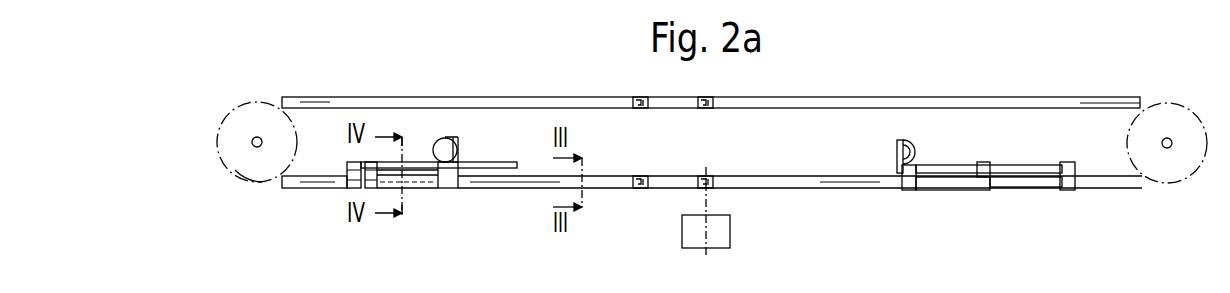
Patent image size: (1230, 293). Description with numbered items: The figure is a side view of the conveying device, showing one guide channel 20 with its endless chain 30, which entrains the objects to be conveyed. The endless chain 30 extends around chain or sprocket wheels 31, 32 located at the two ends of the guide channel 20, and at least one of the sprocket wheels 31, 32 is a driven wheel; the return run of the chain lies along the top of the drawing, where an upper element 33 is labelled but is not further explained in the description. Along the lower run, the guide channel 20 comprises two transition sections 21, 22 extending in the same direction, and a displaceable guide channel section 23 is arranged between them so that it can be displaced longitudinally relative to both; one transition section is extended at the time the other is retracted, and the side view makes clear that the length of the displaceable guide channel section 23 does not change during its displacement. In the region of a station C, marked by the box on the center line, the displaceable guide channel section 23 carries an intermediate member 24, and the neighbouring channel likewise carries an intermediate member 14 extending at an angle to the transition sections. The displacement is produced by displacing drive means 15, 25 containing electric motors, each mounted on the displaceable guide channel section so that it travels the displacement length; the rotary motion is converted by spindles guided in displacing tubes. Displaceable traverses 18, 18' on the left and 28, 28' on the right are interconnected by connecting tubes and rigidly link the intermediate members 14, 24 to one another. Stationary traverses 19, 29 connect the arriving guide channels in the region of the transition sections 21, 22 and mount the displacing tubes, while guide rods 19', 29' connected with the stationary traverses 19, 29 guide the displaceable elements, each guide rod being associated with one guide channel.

The intermediate member 14 is at (708, 177).
The displacing drive means 15 is at (445, 138).
The displaceable traverse 18 is at (433, 154).
The displaceable traverse 18' is at (379, 160).
The stationary traverse 19 is at (335, 163).
The guide rod 19' is at (445, 142).
The guide channel 20 is at (304, 190).
The transition section 21 is at (413, 197).
The transition section 22 is at (945, 198).
The displaceable guide channel section 23 is at (602, 197).
The intermediate member 24 is at (640, 189).
The displacing drive means 25 is at (913, 147).
The displaceable traverse 28 is at (900, 205).
The displaceable traverse 28' is at (994, 147).
The stationary traverse 29 is at (1079, 153).
The guide rod 29' is at (989, 145).
The endless chain 30 is at (273, 103).
The chain or sprocket wheel 31 is at (243, 167).
The chain or sprocket wheel 32 is at (1176, 170).
The upper belt run 33 is at (446, 103).
The station C is at (731, 236).